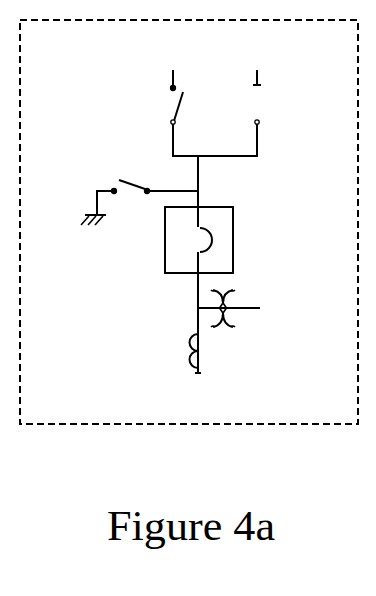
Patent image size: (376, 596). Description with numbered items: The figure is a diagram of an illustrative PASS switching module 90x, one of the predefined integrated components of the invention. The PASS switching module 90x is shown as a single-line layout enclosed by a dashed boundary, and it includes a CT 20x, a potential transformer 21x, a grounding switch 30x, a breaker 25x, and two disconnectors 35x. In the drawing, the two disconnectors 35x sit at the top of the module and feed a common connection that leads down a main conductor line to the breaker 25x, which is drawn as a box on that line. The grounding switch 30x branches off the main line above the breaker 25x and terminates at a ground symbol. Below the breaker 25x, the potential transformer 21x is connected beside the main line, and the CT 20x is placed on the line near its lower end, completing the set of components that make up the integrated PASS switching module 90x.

The CT 20x is at (198, 350).
The potential transformer 21x is at (252, 308).
The breaker 25x is at (233, 248).
The grounding switch 30x is at (134, 182).
The disconnectors 35x is at (170, 103).
The PASS switching module 90x is at (177, 425).